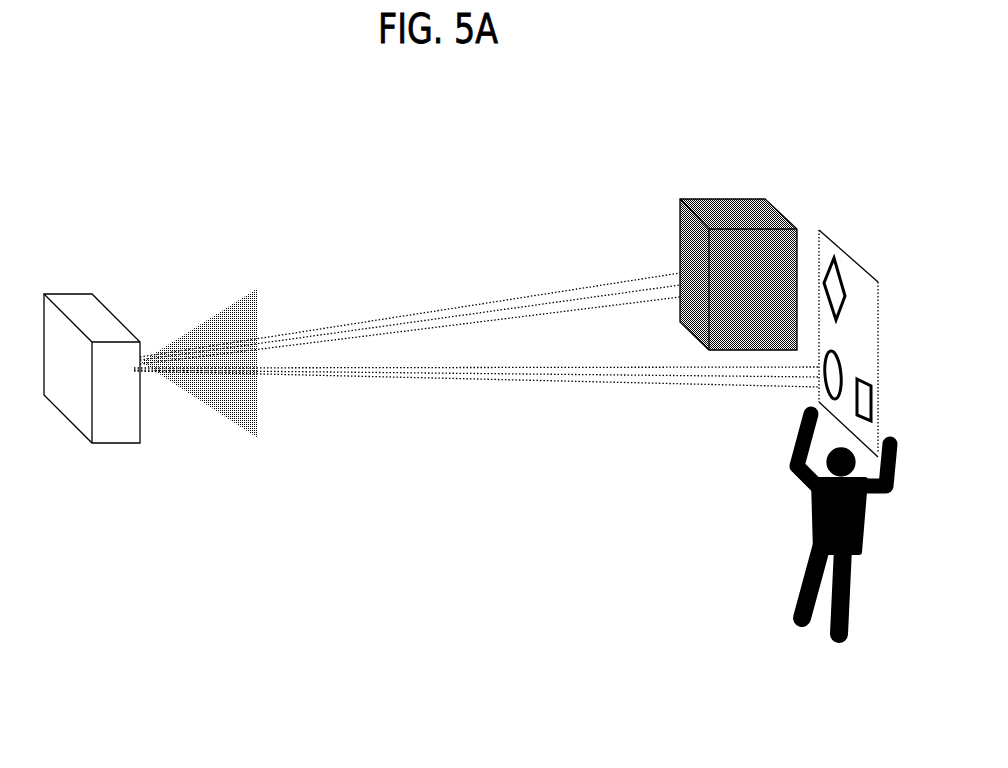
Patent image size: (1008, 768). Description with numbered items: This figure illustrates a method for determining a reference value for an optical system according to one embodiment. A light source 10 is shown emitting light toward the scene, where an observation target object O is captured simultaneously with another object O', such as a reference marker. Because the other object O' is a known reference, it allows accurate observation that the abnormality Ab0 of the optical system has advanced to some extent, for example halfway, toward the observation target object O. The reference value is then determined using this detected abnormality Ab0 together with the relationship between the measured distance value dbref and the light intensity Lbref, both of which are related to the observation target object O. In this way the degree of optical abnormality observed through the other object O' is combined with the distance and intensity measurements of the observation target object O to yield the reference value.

The light source 10 is at (80, 304).
The light intensity Lbref is at (92, 344).
The measured distance value dbref is at (410, 313).
The abnormality of the optical system Ab0 is at (476, 414).
The observation target object O is at (738, 251).
The another object O' is at (853, 333).